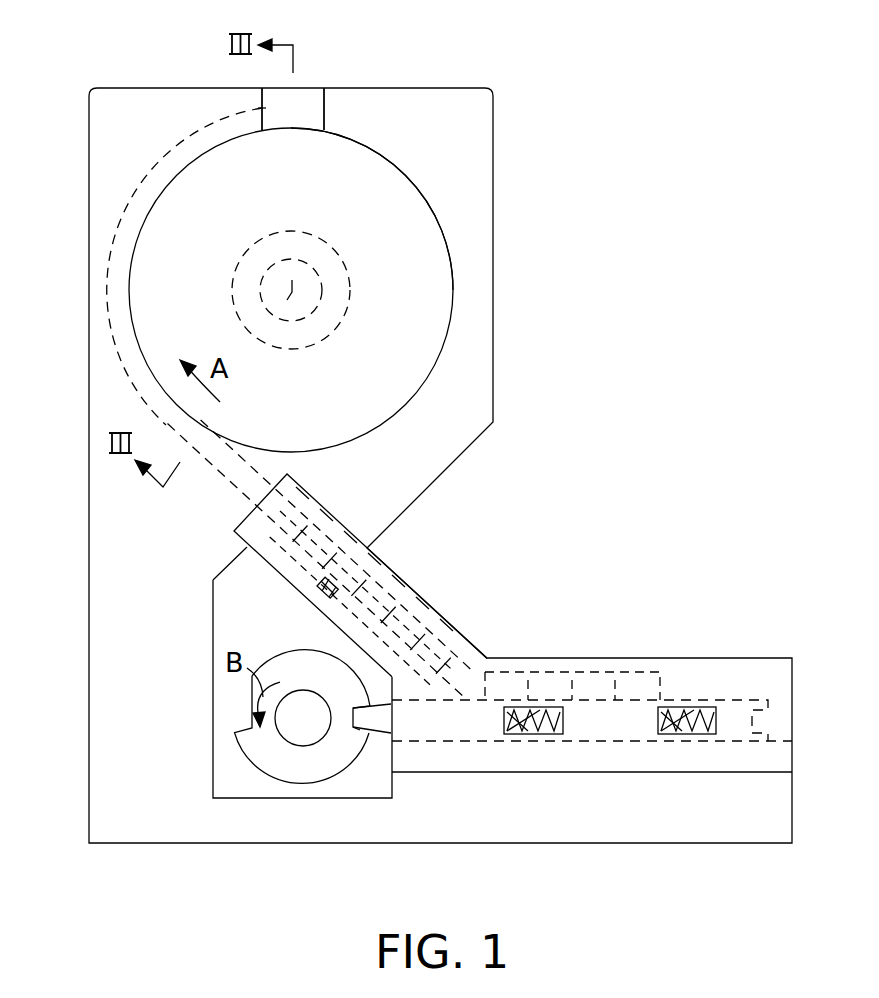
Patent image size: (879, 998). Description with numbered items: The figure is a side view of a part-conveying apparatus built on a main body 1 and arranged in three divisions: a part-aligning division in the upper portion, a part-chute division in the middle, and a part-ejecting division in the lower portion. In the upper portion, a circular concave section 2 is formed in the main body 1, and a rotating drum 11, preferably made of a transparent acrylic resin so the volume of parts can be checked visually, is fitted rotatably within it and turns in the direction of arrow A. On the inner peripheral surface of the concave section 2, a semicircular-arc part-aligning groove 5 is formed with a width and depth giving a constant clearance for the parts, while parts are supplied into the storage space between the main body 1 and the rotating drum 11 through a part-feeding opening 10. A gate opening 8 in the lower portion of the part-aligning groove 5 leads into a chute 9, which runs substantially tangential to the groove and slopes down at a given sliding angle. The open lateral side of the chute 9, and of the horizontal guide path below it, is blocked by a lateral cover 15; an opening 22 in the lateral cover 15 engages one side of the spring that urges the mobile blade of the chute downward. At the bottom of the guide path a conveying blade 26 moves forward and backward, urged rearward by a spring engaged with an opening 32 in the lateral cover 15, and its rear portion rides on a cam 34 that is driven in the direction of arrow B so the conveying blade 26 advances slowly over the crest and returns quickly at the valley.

The main body 1 is at (344, 833).
The circular concave section 2 is at (404, 182).
The part-aligning groove 5 is at (112, 310).
The gate opening 8 is at (208, 447).
The chute 9 is at (432, 600).
The part-feeding opening 10 is at (328, 108).
The rotating drum 11 is at (435, 290).
The lateral cover 15 is at (606, 660).
The opening 22 is at (320, 596).
The conveying blade 26 is at (465, 742).
The opening 32 is at (533, 735).
The cam 34 is at (280, 773).